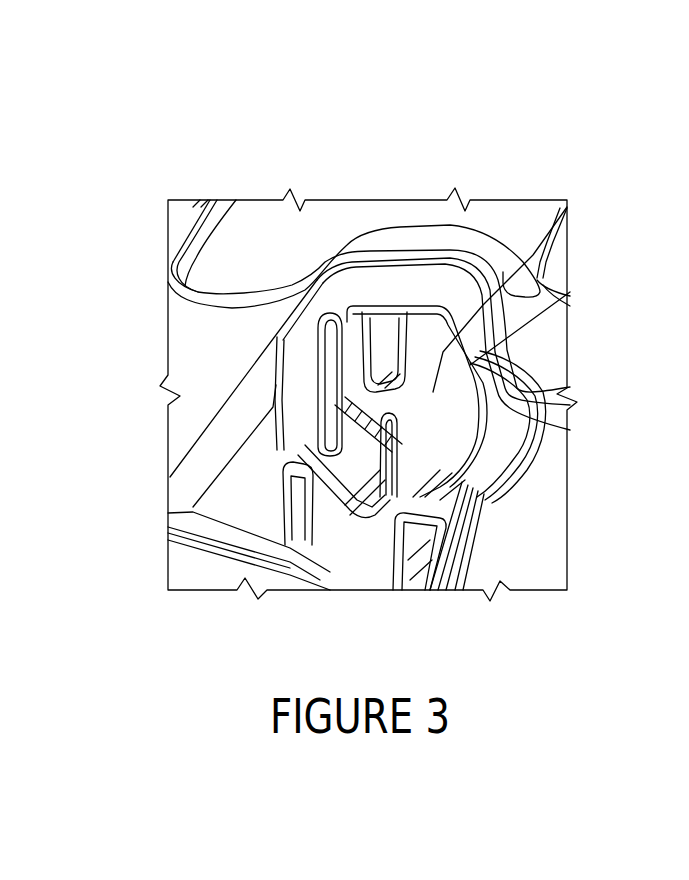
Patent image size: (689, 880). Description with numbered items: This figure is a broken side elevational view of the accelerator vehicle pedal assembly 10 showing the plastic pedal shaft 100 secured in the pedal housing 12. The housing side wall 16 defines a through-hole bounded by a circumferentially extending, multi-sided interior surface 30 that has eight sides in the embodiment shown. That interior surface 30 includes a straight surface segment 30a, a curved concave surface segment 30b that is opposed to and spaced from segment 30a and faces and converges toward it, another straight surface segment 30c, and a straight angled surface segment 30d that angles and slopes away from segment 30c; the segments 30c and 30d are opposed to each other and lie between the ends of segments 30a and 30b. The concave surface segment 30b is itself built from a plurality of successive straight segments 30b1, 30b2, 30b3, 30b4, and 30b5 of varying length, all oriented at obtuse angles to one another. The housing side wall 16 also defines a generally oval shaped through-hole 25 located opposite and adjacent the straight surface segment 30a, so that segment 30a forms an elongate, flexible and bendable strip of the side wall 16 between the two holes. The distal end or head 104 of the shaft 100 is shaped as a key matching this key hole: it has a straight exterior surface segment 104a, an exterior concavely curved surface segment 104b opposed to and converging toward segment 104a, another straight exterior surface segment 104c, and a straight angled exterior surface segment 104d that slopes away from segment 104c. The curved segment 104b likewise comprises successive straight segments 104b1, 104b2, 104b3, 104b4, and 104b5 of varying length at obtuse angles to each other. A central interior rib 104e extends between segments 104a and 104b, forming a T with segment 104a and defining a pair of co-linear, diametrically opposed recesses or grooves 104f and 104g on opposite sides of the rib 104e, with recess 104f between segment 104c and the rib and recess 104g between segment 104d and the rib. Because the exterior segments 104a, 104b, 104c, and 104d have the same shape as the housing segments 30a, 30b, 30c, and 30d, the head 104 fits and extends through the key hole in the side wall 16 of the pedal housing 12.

The accelerator vehicle pedal assembly 10 is at (358, 176).
The pedal housing 12 is at (266, 197).
The housing side wall 16 is at (256, 266).
The through-hole 25 is at (328, 350).
The interior surface 30 is at (312, 535).
The straight surface segment 30a is at (330, 358).
The curved concave surface segment 30b is at (470, 530).
The straight segment 30b1 is at (420, 500).
The straight segment 30b2 is at (465, 462).
The straight segment 30b3 is at (488, 428).
The straight segment 30b4 is at (490, 383).
The straight segment 30b5 is at (570, 290).
The straight surface segment 30c is at (344, 481).
The straight angled surface segment 30d is at (397, 320).
The plastic pedal shaft 100 is at (378, 440).
The head 104 is at (483, 232).
The straight exterior surface segment 104a is at (358, 404).
The exterior concavely curved surface segment 104b is at (490, 415).
The straight segment 104b1 is at (493, 492).
The straight segment 104b2 is at (483, 457).
The straight segment 104b3 is at (487, 443).
The straight segment 104b4 is at (493, 400).
The straight segment 104b5 is at (530, 275).
The straight exterior surface segment 104c is at (345, 515).
The straight angled exterior surface segment 104d is at (378, 317).
The central interior rib 104e is at (372, 430).
The recess 104f is at (300, 488).
The recess 104g is at (395, 392).